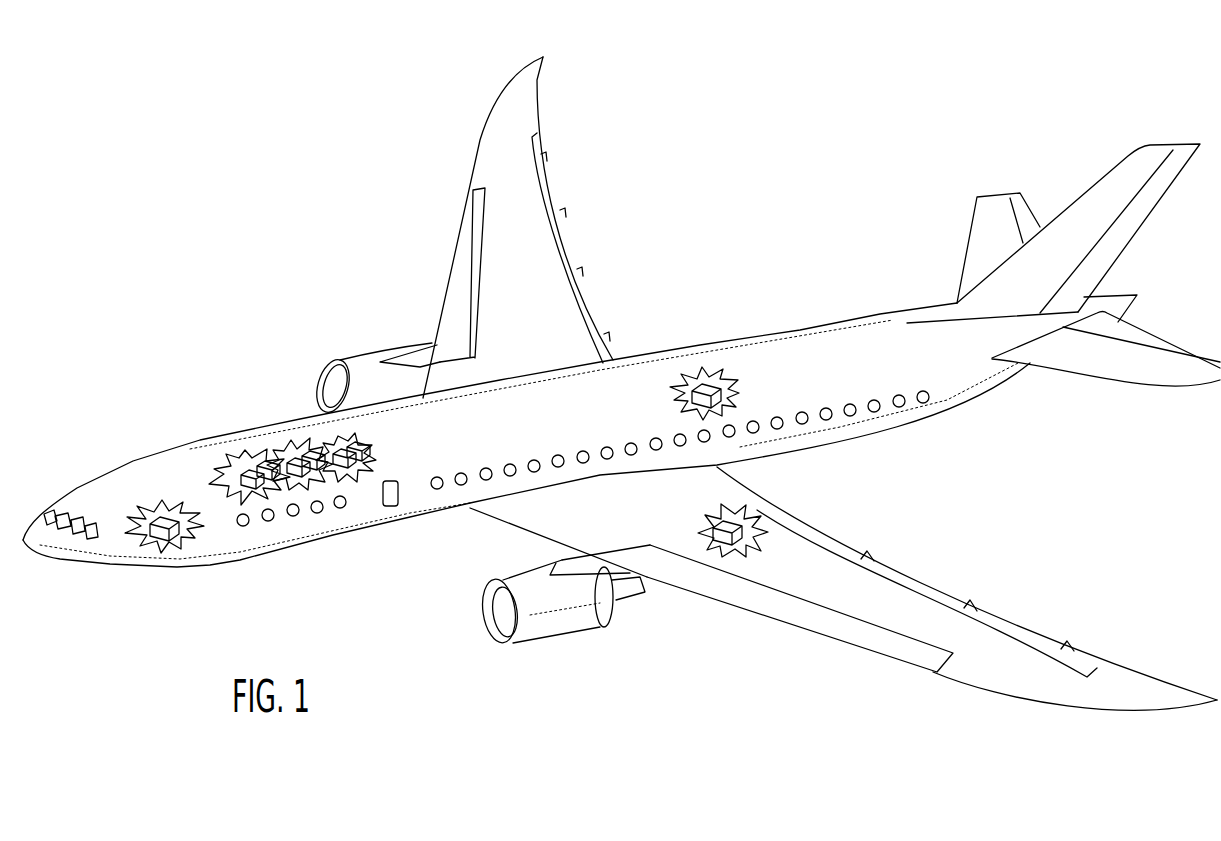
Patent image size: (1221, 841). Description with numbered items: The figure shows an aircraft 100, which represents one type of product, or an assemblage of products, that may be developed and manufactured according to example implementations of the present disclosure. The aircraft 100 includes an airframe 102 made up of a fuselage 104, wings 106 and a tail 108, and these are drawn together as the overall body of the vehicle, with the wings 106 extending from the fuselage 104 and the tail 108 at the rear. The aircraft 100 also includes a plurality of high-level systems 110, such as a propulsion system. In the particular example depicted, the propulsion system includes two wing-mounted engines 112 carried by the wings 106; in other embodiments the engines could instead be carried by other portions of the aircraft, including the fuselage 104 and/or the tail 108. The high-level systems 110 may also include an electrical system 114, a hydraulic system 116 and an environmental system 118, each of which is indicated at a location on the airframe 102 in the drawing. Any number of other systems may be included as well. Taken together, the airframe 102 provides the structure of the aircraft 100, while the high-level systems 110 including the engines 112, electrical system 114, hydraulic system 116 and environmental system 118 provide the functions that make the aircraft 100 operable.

The aircraft 100 is at (258, 228).
The airframe 102 is at (261, 414).
The fuselage 104 is at (287, 548).
The wings 106 is at (473, 165).
The tail 108 is at (928, 212).
The high-level systems 110 is at (1058, 517).
The wing-mounted engines 112 is at (358, 364).
The electrical system 114 is at (163, 522).
The hydraulic system 116 is at (728, 528).
The environmental system 118 is at (707, 390).